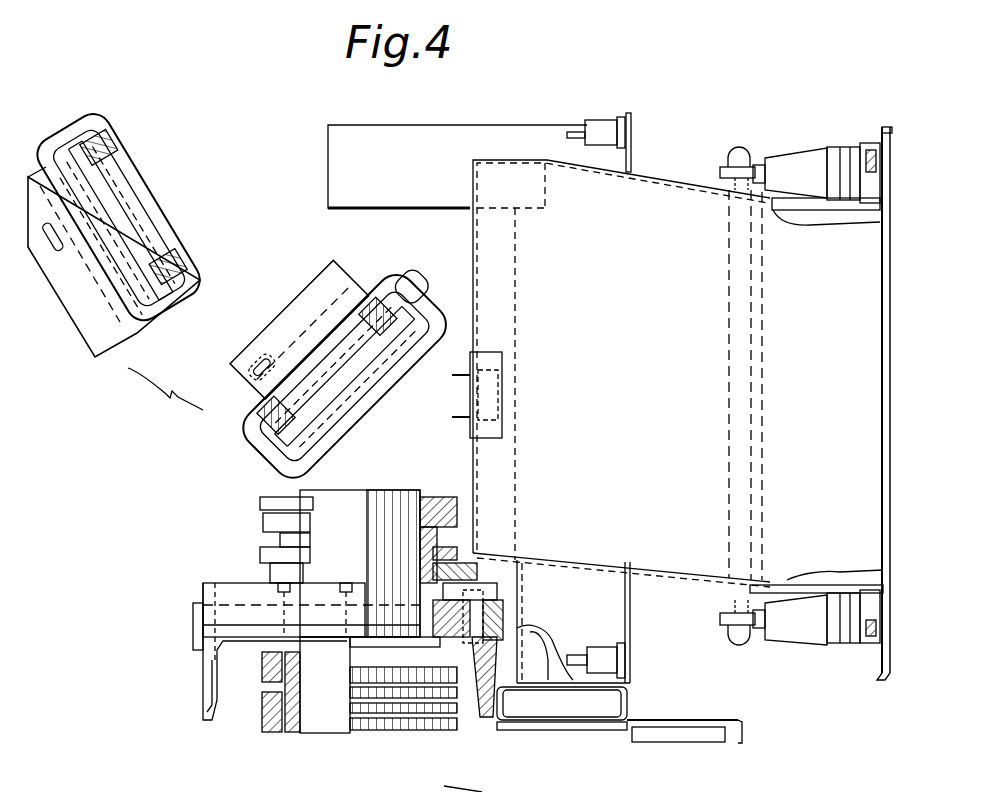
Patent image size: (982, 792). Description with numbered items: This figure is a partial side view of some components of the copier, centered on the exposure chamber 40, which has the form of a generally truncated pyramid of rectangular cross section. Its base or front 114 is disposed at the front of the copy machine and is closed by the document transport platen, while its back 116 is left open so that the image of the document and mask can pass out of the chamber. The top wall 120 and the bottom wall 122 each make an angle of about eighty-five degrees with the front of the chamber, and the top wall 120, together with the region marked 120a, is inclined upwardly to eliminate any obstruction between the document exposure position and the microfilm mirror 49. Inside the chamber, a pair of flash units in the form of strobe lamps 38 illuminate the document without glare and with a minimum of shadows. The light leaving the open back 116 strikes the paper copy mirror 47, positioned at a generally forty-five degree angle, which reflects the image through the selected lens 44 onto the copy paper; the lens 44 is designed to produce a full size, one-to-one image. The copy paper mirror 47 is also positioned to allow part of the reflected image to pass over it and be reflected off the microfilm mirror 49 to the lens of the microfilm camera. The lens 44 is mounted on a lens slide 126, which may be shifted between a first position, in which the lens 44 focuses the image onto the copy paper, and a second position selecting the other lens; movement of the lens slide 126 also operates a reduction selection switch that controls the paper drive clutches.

The strobe lamps 38 is at (733, 262).
The exposure chamber 40 is at (669, 413).
The lens 44 is at (260, 508).
The paper copy mirror 47 is at (240, 442).
The microfilm mirror 49 is at (177, 227).
The front 114 is at (882, 352).
The back 116 is at (473, 462).
The top wall 120 is at (843, 215).
The connector pin 120a is at (675, 182).
The bottom wall 122 is at (678, 577).
The lens slide 126 is at (205, 684).